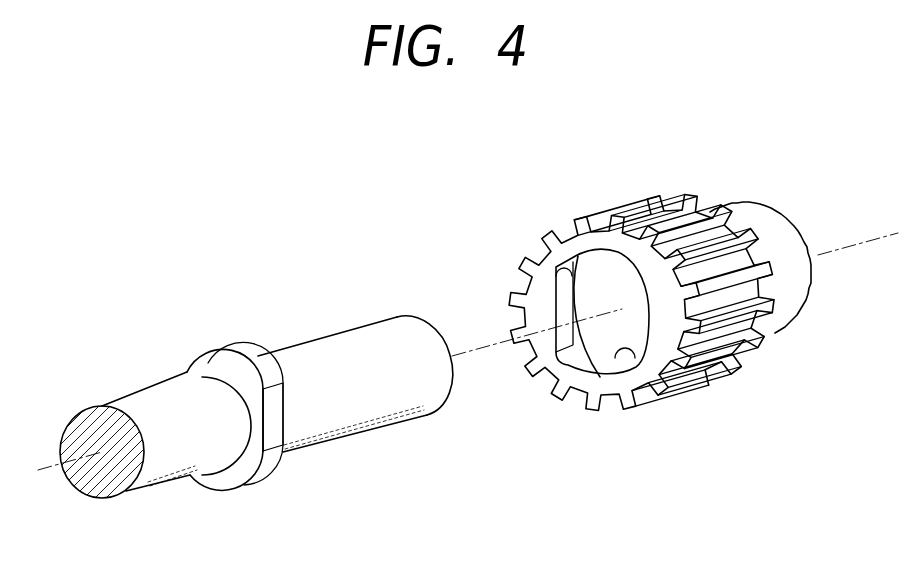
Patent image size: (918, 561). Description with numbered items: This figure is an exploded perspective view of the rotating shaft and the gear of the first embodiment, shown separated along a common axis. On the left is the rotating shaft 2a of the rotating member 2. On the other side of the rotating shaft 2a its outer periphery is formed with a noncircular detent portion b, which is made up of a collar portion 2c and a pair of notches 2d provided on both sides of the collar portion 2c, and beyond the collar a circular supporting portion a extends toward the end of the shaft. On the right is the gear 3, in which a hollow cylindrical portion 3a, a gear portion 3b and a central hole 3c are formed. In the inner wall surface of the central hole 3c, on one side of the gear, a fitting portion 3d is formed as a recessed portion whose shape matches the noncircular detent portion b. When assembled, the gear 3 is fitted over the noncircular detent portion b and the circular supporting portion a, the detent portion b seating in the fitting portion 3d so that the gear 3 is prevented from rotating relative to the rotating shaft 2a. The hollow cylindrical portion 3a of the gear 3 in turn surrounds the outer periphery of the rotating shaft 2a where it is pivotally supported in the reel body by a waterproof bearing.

The rotating member 2 is at (150, 380).
The rotating shaft 2a is at (123, 403).
The collar portion 2c is at (252, 352).
The notches 2d is at (283, 425).
The circular supporting portion a is at (347, 333).
The noncircular detent portion b is at (298, 400).
The gear 3 is at (577, 216).
The hollow cylindrical portion 3a is at (763, 213).
The gear portion 3b is at (627, 200).
The central hole 3c is at (619, 362).
The fitting portion 3d is at (546, 266).